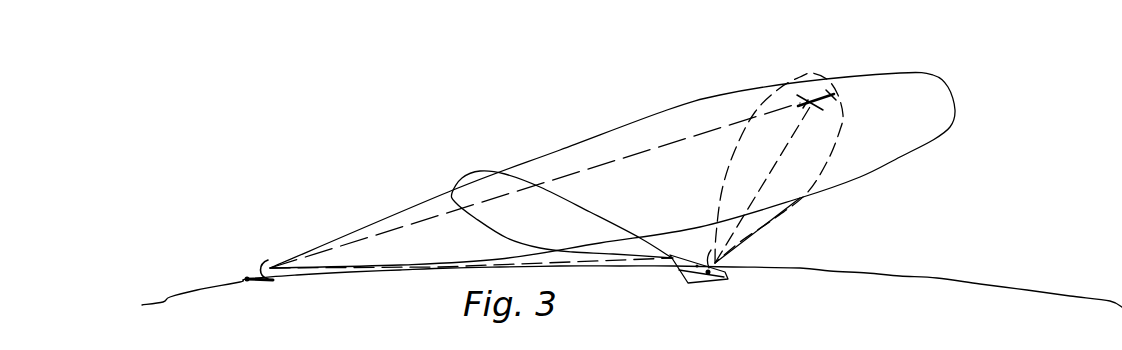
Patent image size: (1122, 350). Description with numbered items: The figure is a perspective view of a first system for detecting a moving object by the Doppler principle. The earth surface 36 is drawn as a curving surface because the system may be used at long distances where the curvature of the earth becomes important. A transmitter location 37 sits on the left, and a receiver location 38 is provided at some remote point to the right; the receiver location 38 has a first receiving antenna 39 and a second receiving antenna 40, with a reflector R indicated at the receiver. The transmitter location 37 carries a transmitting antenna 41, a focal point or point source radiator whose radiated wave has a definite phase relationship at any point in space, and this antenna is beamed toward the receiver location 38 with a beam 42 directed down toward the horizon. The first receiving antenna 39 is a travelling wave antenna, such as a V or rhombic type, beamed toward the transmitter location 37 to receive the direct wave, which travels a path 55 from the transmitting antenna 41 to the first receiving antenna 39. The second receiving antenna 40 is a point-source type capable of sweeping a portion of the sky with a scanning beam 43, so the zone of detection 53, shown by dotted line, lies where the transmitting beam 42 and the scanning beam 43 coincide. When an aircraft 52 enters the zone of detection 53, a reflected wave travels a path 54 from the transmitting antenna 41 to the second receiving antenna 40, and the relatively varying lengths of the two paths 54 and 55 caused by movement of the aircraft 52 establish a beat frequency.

The earth surface 36 is at (865, 273).
The transmitter location 37 is at (248, 283).
The receiver location 38 is at (716, 284).
The first receiving antenna 39 is at (697, 266).
The second receiving antenna 40 is at (718, 265).
The transmitting antenna 41 is at (268, 259).
The transmitting antenna beam 42 is at (667, 110).
The scanning beam 43 is at (782, 217).
The aircraft 52 is at (815, 100).
The zone of detection 53 is at (838, 133).
The reflected wave path 54 is at (603, 165).
The direct wave path 55 is at (428, 265).
The reflector R is at (680, 280).